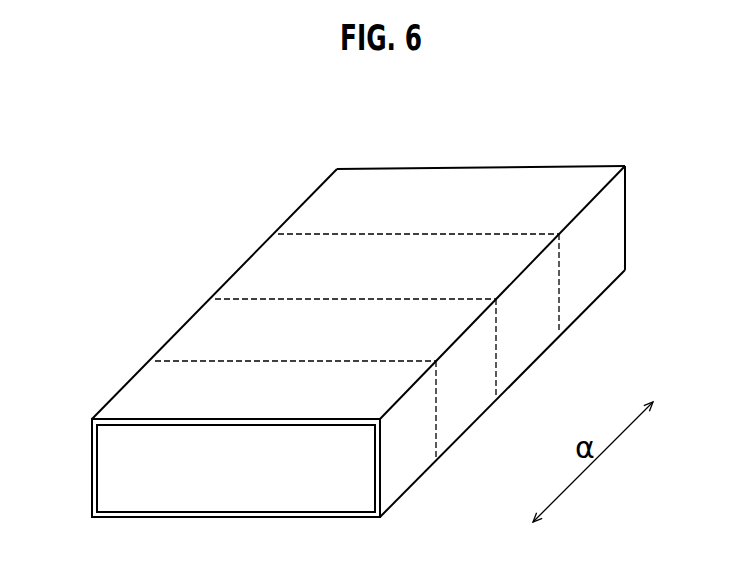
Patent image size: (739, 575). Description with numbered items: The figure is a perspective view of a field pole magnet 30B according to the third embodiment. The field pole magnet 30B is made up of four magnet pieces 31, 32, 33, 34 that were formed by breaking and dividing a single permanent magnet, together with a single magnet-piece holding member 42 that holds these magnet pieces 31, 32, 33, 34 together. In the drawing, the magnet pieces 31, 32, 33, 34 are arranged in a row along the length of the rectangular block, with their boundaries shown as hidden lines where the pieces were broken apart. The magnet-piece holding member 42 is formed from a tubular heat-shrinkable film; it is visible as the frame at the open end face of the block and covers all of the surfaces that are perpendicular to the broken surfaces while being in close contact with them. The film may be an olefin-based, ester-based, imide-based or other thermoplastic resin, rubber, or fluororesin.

The field pole magnet 30B is at (337, 165).
The magnet-piece holding member 42 is at (118, 392).
The magnet piece 31 is at (400, 458).
The magnet piece 32 is at (460, 402).
The magnet piece 33 is at (522, 340).
The magnet piece 34 is at (590, 283).